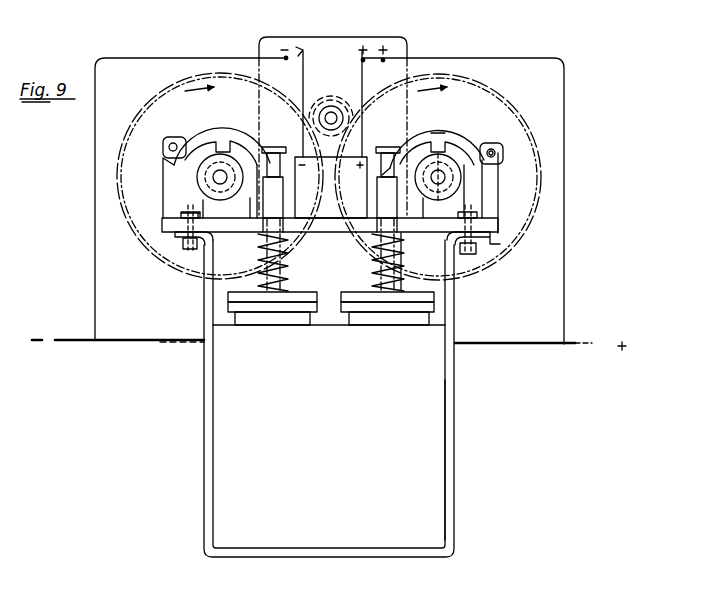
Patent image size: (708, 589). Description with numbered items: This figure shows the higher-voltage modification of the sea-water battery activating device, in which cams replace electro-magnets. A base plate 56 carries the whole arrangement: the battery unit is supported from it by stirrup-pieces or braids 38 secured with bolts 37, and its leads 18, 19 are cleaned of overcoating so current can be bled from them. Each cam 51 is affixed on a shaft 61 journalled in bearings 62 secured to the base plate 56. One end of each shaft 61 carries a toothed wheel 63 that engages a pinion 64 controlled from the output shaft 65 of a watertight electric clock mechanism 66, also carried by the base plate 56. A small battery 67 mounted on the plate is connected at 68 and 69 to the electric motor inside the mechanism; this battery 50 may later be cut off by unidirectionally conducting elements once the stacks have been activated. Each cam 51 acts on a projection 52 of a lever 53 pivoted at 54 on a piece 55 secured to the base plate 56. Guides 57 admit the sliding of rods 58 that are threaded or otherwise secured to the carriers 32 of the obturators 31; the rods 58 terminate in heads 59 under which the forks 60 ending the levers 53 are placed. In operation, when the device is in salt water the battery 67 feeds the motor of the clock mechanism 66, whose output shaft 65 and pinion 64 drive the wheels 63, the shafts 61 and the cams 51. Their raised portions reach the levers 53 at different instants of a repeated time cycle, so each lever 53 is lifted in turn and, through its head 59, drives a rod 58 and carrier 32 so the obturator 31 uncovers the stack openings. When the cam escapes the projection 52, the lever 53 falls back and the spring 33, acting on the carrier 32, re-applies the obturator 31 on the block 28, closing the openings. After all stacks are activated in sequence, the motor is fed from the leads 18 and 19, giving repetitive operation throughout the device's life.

The lead 18 is at (539, 346).
The lead 19 is at (108, 343).
The block 28 is at (419, 325).
The obturator 31 is at (430, 318).
The carrier 32 is at (434, 296).
The spring 33 is at (409, 254).
The bolt 37 is at (180, 213).
The stirrup-piece 38 is at (203, 451).
The battery 50 is at (434, 495).
The cam 51 is at (472, 182).
The projection 52 is at (453, 136).
The lever 53 is at (471, 138).
The pivot 54 is at (499, 151).
The piece 55 is at (484, 207).
The base plate 56 is at (502, 229).
The guide 57 is at (258, 268).
The rod 58 is at (256, 286).
The head 59 is at (263, 145).
The fork 60 is at (404, 150).
The shaft 61 is at (213, 175).
The bearing 62 is at (215, 206).
The toothed wheel 63 is at (154, 104).
The pinion 64 is at (333, 108).
The output shaft 65 is at (327, 95).
The electric clock mechanism 66 is at (256, 38).
The battery 67 is at (325, 182).
The connection 68 is at (365, 58).
The connection 69 is at (296, 44).